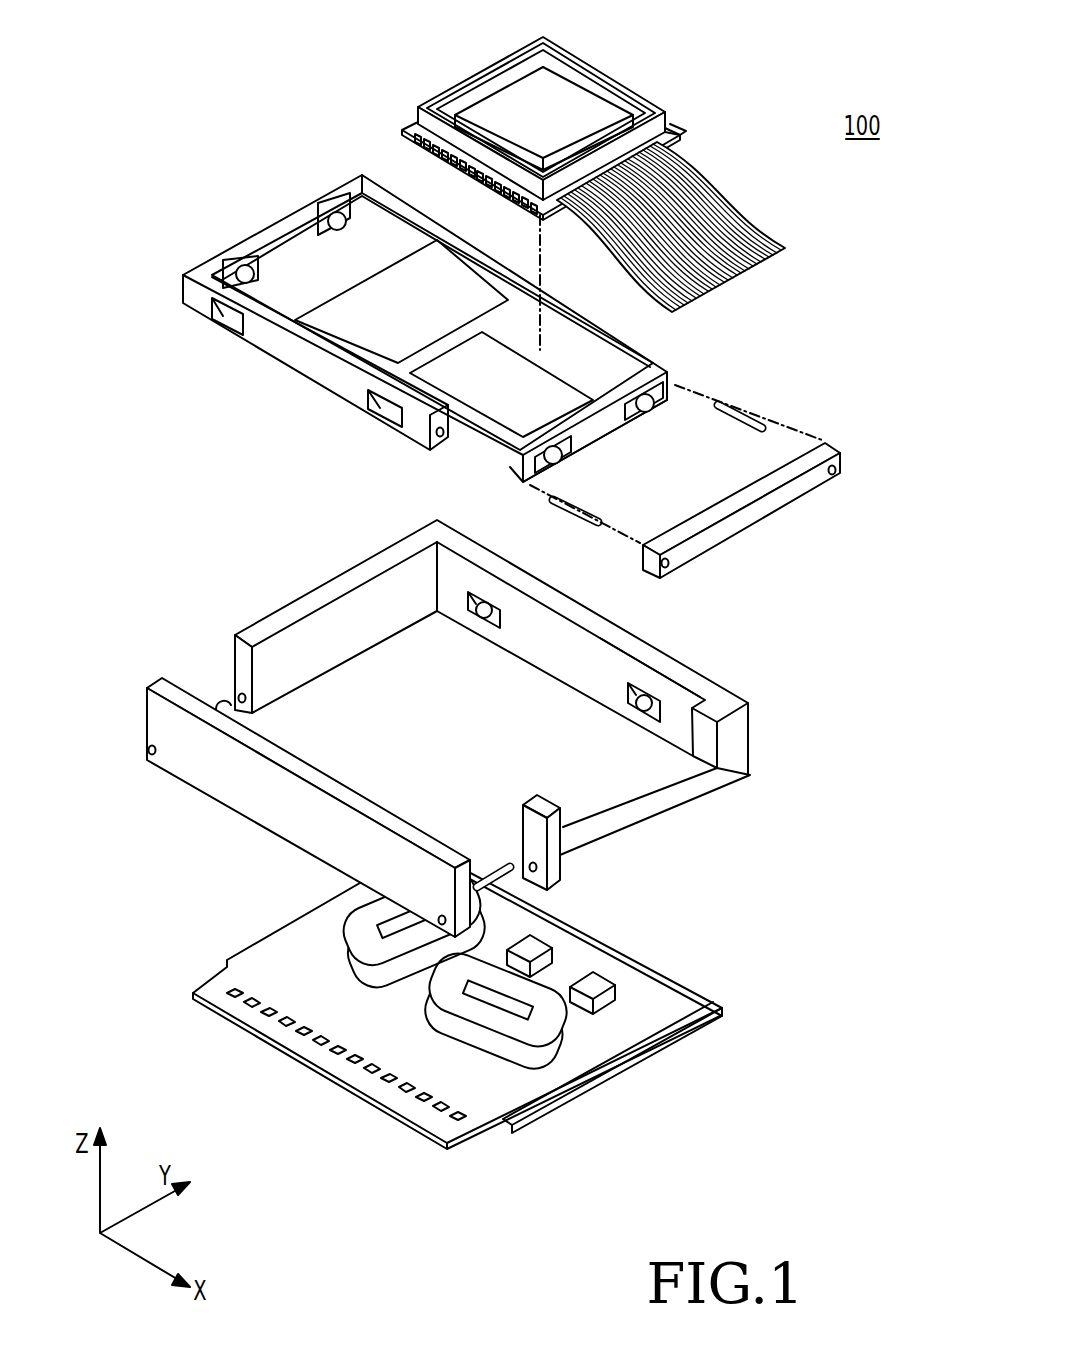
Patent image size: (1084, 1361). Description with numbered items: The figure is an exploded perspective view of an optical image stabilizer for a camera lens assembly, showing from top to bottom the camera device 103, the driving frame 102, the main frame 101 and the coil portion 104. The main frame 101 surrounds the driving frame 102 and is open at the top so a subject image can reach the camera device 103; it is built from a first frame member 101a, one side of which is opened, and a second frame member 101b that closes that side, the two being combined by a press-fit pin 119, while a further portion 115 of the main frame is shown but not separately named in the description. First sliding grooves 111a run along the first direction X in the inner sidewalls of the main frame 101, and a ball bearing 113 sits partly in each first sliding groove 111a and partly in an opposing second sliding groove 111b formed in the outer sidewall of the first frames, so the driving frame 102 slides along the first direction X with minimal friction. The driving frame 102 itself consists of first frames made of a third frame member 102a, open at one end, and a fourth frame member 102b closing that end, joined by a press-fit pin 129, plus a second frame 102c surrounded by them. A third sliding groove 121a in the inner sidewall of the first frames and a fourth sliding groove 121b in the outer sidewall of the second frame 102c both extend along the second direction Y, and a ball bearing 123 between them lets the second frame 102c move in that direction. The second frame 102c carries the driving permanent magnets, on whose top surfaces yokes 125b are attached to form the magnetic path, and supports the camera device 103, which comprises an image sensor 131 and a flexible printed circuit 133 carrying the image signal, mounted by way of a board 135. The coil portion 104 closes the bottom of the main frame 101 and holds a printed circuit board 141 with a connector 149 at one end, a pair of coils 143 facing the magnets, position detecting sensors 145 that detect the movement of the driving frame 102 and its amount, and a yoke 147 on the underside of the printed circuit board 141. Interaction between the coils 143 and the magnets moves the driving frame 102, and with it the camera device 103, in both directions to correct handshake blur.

The main frame 101 is at (522, 722).
The first frame member 101a is at (560, 641).
The second frame member 101b is at (256, 800).
The driving frame 102 is at (481, 352).
The third frame member 102a is at (268, 369).
The fourth frame member 102b is at (758, 517).
The second frame 102c is at (622, 355).
The camera device 103 is at (593, 176).
The coil portion 104 is at (432, 1039).
The first sliding groove 111a is at (660, 713).
The second sliding groove 111b is at (225, 316).
The ball bearing 113 is at (475, 600).
The base 115 is at (666, 786).
The press-fit pin 119 is at (225, 700).
The third sliding groove 121a is at (317, 226).
The fourth sliding groove 121b is at (637, 420).
The ball bearing 123 is at (337, 211).
The yoke 125b is at (377, 340).
The press-fit pin 129 is at (755, 418).
The image sensor 131 is at (553, 85).
The flexible printed circuit 133 is at (722, 187).
The board 135 is at (675, 137).
The printed circuit board 141 is at (475, 1098).
The coil 143 is at (360, 945).
The position detecting sensor 145 is at (537, 945).
The yoke 147 is at (660, 1032).
The connector 149 is at (300, 1062).